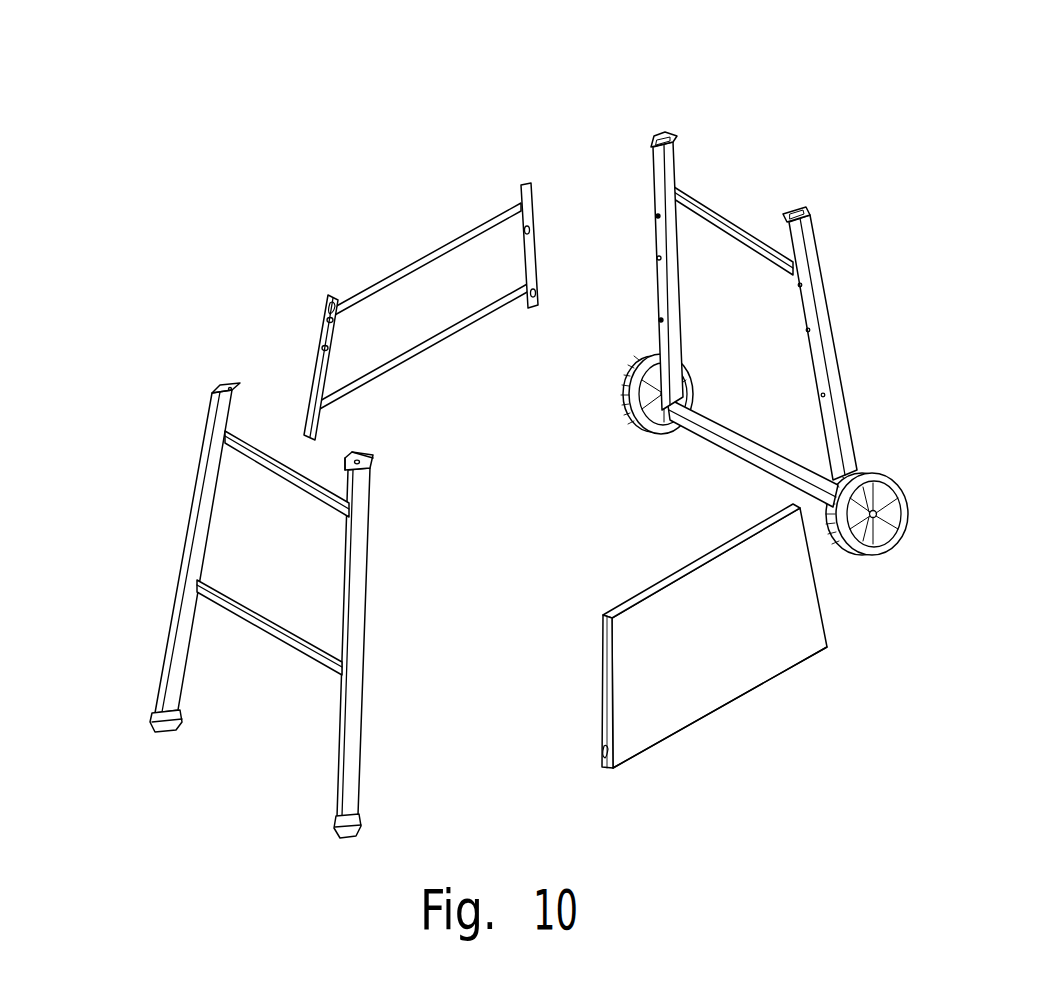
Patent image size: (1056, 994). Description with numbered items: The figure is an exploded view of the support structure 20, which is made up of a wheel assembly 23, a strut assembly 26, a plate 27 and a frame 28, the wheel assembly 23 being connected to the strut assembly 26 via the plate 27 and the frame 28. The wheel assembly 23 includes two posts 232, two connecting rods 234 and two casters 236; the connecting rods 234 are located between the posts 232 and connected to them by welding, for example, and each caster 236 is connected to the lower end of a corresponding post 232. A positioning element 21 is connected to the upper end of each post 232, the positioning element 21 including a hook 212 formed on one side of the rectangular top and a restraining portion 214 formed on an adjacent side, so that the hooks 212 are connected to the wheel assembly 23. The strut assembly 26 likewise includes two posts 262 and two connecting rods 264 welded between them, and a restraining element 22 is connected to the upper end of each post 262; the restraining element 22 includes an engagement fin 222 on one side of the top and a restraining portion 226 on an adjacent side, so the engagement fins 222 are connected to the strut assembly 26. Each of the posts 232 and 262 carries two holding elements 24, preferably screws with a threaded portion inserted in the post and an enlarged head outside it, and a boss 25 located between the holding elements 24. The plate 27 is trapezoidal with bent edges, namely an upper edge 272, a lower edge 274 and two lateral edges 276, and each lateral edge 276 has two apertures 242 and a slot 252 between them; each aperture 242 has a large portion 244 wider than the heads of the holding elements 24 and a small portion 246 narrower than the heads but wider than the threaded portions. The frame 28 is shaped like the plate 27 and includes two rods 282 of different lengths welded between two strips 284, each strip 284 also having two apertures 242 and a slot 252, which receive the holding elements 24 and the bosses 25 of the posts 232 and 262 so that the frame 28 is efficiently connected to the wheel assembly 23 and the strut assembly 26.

The support structure 20 is at (588, 152).
The positioning element 21 is at (817, 282).
The hook 212 is at (632, 239).
The restraining portion 214 is at (632, 70).
The restraining element 22 is at (449, 448).
The engagement fin 222 is at (373, 452).
The restraining portion 226 is at (420, 481).
The wheel assembly 23 is at (837, 367).
The post 232 is at (826, 343).
The connecting rod 234 is at (879, 206).
The caster 236 is at (895, 480).
The holding element 24 is at (656, 213).
The boss 25 is at (657, 256).
The strut assembly 26 is at (261, 636).
The post 262 is at (360, 695).
The connecting rod 264 is at (283, 633).
The plate 27 is at (676, 620).
The upper edge 272 is at (722, 545).
The lower edge 274 is at (810, 658).
The lateral edge 276 is at (607, 735).
The frame 28 is at (428, 240).
The rod 282 is at (497, 218).
The strip 284 is at (523, 187).
The aperture 242 is at (415, 422).
The large portion 244 is at (325, 305).
The small portion 246 is at (330, 303).
The slot 252 is at (322, 348).